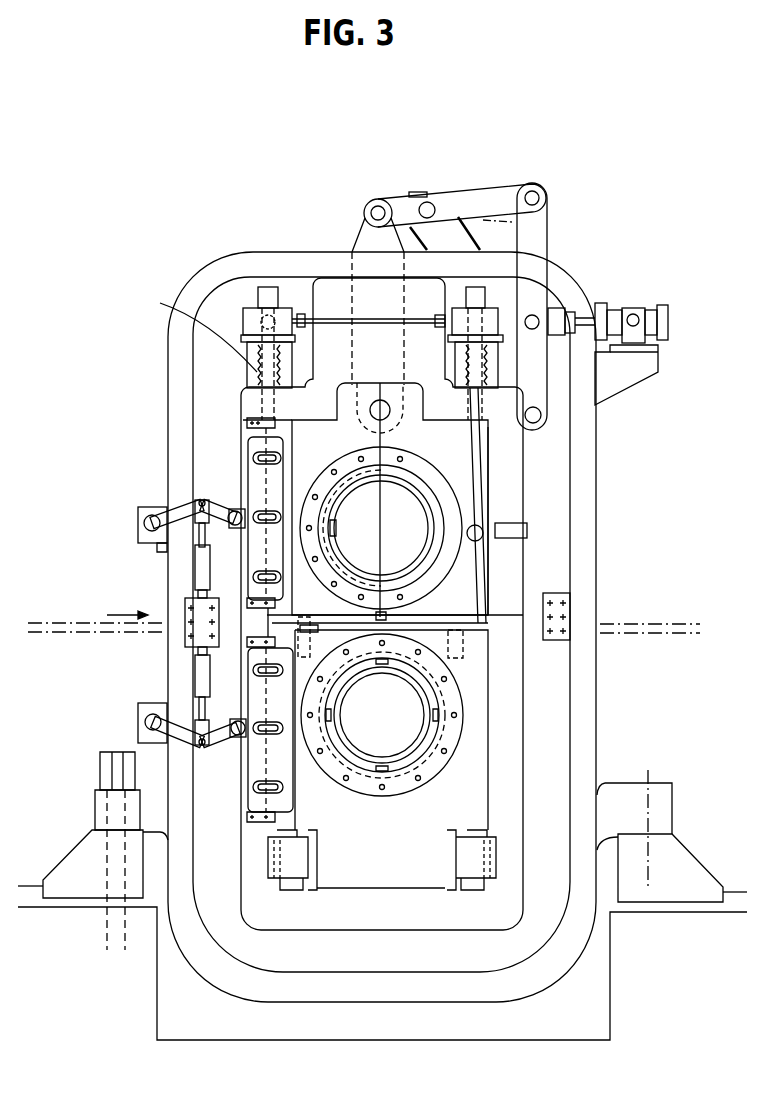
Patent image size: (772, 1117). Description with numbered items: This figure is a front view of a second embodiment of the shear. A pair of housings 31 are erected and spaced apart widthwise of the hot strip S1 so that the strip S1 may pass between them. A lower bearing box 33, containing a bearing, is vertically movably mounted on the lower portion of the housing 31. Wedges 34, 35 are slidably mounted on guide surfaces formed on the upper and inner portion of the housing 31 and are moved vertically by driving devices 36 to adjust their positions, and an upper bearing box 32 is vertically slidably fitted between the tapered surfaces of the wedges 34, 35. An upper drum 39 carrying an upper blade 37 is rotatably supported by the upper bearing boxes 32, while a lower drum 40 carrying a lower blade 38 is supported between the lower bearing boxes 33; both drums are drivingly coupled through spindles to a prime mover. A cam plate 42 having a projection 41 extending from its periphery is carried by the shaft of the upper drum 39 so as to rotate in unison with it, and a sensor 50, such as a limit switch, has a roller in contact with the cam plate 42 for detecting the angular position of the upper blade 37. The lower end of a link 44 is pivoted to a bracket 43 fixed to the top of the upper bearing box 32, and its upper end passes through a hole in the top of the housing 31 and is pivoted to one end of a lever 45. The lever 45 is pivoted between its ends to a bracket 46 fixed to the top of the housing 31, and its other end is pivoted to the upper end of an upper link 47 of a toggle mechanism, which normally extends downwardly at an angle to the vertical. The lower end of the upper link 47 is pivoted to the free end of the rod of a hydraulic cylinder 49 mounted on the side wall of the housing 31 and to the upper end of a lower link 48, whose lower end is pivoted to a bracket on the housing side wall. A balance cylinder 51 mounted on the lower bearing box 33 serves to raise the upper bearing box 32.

The housing 31 is at (178, 367).
The upper bearing box 32 is at (194, 329).
The lower bearing box 33 is at (348, 863).
The wedge 34 is at (265, 490).
The wedge 35 is at (480, 448).
The driving device 36 is at (273, 390).
The upper blade 37 is at (425, 620).
The lower blade 38 is at (352, 628).
The upper drum 39 is at (408, 522).
The lower drum 40 is at (397, 740).
The projection 41 is at (475, 543).
The cam plate 42 is at (453, 563).
The bracket 43 is at (346, 385).
The link 44 is at (360, 237).
The lever 45 is at (472, 202).
The bracket 46 is at (443, 233).
The upper link 47 is at (537, 255).
The lower link 48 is at (597, 405).
The hydraulic cylinder 49 is at (650, 317).
The sensor 50 is at (527, 530).
The balance cylinder 51 is at (272, 623).
The hot strip S1 is at (55, 620).